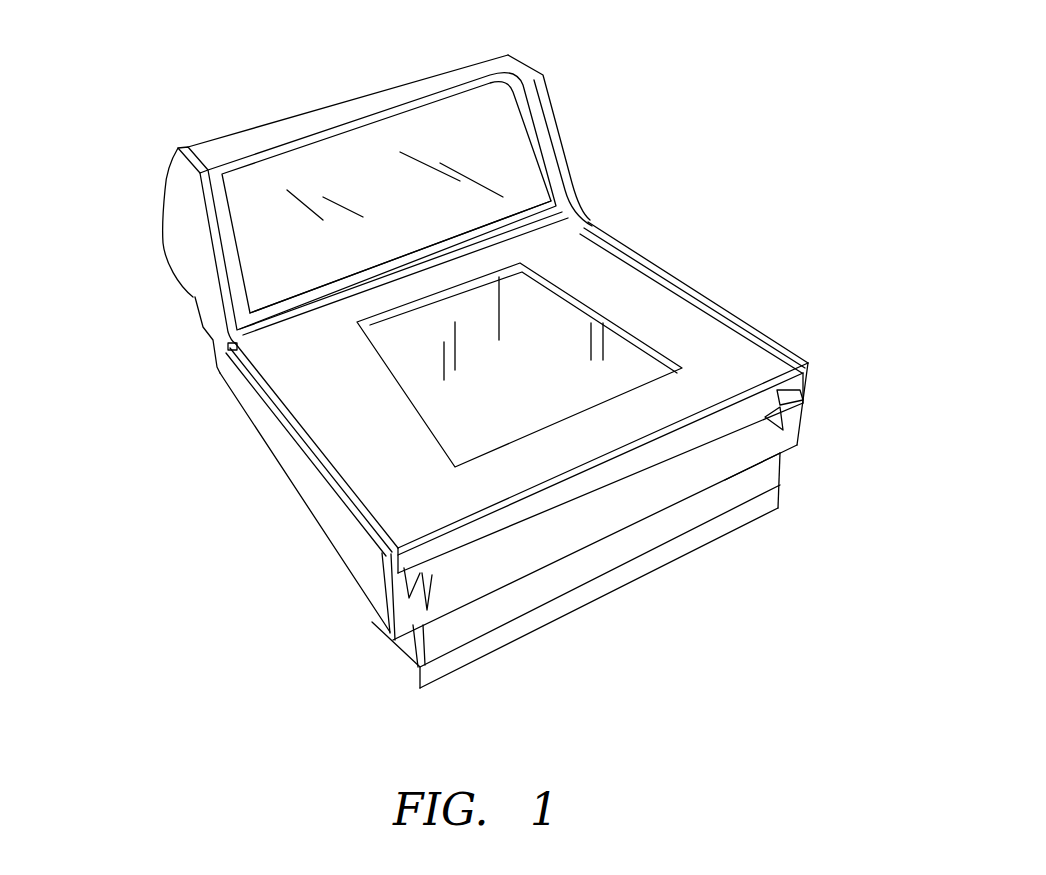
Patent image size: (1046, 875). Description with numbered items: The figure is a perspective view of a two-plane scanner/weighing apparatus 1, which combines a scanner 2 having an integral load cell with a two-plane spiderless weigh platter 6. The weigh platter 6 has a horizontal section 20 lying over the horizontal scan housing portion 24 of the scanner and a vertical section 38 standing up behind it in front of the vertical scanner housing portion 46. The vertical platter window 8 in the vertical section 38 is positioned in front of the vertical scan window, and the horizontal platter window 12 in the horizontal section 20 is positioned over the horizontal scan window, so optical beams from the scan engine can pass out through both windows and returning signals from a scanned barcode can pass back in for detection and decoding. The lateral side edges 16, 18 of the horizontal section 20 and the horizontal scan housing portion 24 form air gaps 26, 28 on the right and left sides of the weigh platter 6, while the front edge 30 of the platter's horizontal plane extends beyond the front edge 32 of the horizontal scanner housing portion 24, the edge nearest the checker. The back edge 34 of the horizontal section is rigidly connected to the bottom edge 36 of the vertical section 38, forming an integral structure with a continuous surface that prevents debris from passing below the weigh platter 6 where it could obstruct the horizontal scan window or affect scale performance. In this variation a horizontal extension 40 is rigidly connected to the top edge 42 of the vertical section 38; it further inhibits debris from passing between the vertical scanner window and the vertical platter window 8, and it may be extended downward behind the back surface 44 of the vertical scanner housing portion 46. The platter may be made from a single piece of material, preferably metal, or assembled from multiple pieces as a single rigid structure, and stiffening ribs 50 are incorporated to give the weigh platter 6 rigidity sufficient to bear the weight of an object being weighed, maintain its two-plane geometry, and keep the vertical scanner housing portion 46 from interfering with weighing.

The two-plane scanner/weighing apparatus 1 is at (692, 85).
The scanner 2 is at (192, 247).
The two-plane spiderless weigh platter 6 is at (570, 187).
The vertical platter window 8 is at (530, 95).
The horizontal platter window 12 is at (540, 362).
The lateral side edge 16 is at (727, 350).
The lateral side edge 18 is at (290, 418).
The horizontal section 20 is at (745, 292).
The horizontal scan housing portion 24 is at (478, 588).
The air gap 26 is at (786, 350).
The air gap 28 is at (343, 482).
The front edge 30 is at (796, 444).
The front edge 32 is at (637, 497).
The back edge 34 is at (568, 232).
The bottom edge 36 is at (567, 168).
The vertical section 38 is at (483, 112).
The horizontal extension 40 is at (480, 73).
The top edge 42 is at (370, 117).
The back surface 44 is at (170, 149).
The vertical scanner housing portion 46 is at (185, 215).
The stiffening ribs 50 is at (490, 533).